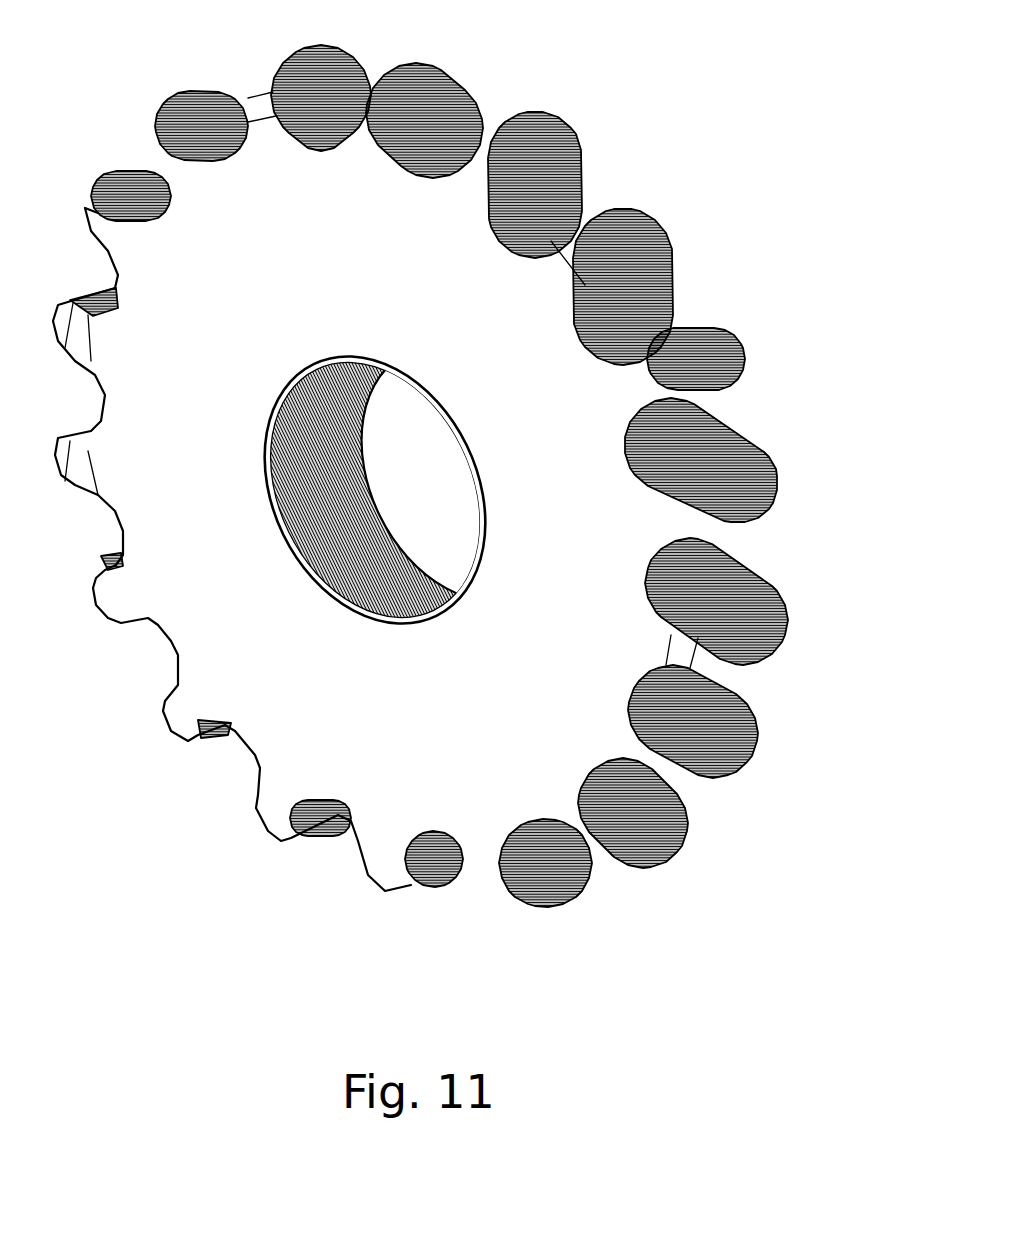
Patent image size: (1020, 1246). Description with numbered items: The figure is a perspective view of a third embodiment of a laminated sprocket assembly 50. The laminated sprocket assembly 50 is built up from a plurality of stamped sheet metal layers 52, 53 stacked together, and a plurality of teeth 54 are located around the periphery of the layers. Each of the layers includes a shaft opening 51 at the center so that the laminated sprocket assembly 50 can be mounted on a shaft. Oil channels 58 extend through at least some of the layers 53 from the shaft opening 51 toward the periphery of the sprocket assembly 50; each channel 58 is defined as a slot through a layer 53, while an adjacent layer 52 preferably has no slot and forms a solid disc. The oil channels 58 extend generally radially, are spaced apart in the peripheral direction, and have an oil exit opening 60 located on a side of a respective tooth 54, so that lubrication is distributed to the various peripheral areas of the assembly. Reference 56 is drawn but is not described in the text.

The laminated sprocket assembly 50 is at (477, 509).
The shaft opening 51 is at (302, 503).
The layer 52 is at (466, 885).
The layer 53 is at (546, 880).
The teeth 54 is at (773, 483).
The tooth 56 is at (762, 745).
The oil channel 58 is at (331, 497).
The oil exit opening 60 is at (458, 90).